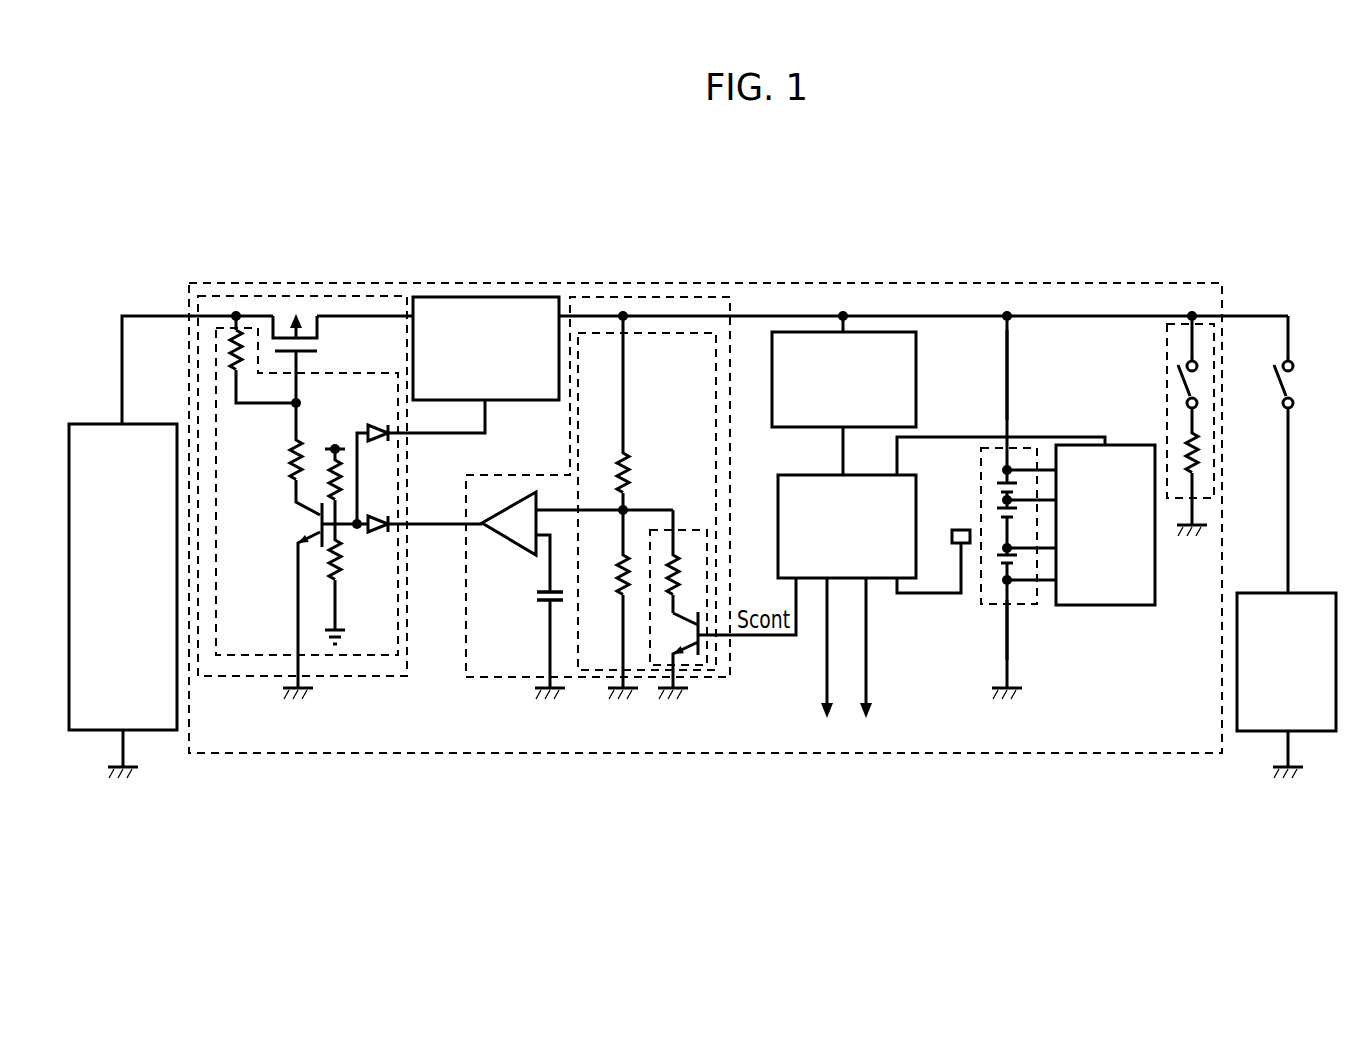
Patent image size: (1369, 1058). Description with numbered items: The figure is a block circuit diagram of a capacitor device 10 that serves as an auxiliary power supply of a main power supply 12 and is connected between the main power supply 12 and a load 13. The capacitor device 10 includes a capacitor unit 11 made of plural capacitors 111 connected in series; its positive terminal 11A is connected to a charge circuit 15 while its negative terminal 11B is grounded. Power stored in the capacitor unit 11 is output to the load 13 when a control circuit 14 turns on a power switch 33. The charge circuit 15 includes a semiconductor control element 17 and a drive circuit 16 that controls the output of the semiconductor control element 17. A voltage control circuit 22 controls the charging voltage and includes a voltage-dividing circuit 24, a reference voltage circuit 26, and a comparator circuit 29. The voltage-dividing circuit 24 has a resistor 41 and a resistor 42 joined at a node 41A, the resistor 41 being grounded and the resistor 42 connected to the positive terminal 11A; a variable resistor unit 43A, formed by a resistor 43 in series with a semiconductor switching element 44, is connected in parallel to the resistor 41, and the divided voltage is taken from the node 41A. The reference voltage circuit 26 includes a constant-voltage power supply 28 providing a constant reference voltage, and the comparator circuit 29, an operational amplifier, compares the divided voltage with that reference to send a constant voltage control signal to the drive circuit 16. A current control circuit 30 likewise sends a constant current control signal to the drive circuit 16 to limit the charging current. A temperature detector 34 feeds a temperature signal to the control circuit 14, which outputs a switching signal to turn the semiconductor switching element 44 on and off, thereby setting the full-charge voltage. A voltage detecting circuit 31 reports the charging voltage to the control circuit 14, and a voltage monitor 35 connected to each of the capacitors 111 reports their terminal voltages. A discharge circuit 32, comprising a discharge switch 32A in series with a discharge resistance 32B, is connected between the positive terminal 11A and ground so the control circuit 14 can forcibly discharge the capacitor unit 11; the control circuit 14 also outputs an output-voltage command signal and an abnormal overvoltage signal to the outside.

The capacitor device 10 is at (1075, 755).
The capacitor unit 11 is at (1018, 447).
The positive terminal 11A is at (1007, 408).
The negative terminal 11B is at (1010, 626).
The capacitors 111 is at (1003, 562).
The main power supply 12 is at (95, 424).
The load 13 is at (1315, 593).
The control circuit 14 is at (778, 488).
The charge circuit 15 is at (212, 293).
The drive circuit 16 is at (213, 348).
The semiconductor control element 17 is at (290, 307).
The voltage control circuit 22 is at (604, 297).
The voltage-dividing circuit 24 is at (672, 333).
The reference voltage circuit 26 is at (543, 607).
The constant-voltage power supply 28 is at (550, 596).
The comparator circuit 29 is at (519, 498).
The current control circuit 30 is at (524, 297).
The voltage detecting circuit 31 is at (917, 382).
The discharge circuit 32 is at (1203, 324).
The discharge switch 32A is at (1195, 375).
The discharge resistance 32B is at (1198, 450).
The power switch 33 is at (1295, 375).
The temperature detector 34 is at (957, 530).
The voltage monitor 35 is at (1133, 607).
The resistor 41 is at (613, 577).
The node 41A is at (625, 508).
The resistor 42 is at (627, 457).
The resistor 43 is at (685, 577).
The variable resistor unit 43A is at (650, 640).
The semiconductor switching element 44 is at (683, 650).